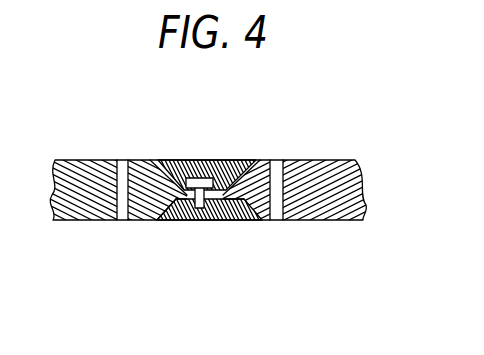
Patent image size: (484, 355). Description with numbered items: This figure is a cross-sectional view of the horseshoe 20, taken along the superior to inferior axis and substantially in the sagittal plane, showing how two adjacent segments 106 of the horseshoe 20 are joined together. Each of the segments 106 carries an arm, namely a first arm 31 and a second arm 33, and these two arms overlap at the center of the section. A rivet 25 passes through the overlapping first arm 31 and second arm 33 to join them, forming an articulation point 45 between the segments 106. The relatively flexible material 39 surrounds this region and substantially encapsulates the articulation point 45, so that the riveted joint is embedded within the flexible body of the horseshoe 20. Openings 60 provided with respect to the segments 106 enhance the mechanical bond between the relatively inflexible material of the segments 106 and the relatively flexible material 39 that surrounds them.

The horseshoe 20 is at (312, 147).
The segments 106 is at (90, 160).
The openings 60 is at (153, 160).
The second arm 33 is at (230, 160).
The relatively flexible material 39 is at (217, 218).
The first arm 31 is at (175, 216).
The rivet 25 is at (210, 160).
The articulation point 45 is at (198, 160).